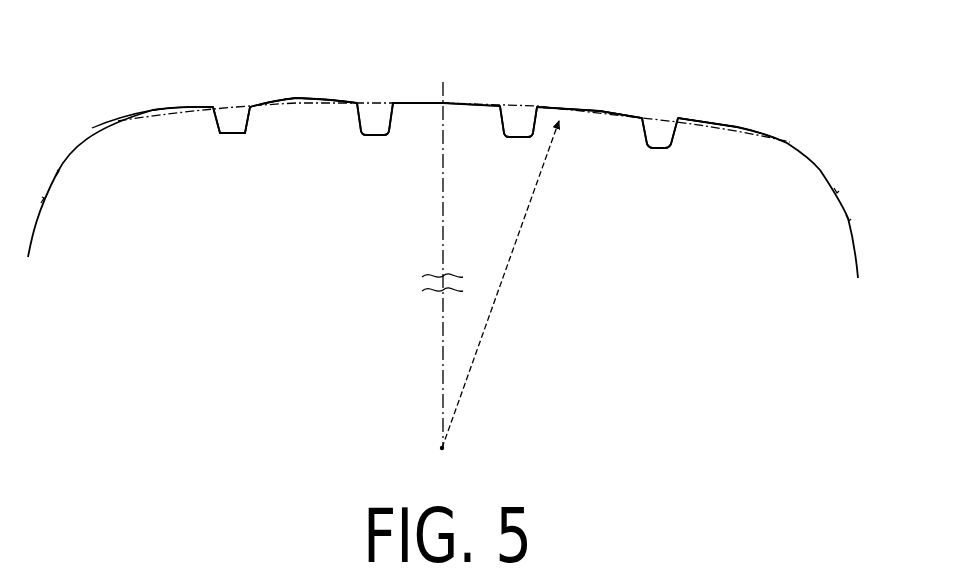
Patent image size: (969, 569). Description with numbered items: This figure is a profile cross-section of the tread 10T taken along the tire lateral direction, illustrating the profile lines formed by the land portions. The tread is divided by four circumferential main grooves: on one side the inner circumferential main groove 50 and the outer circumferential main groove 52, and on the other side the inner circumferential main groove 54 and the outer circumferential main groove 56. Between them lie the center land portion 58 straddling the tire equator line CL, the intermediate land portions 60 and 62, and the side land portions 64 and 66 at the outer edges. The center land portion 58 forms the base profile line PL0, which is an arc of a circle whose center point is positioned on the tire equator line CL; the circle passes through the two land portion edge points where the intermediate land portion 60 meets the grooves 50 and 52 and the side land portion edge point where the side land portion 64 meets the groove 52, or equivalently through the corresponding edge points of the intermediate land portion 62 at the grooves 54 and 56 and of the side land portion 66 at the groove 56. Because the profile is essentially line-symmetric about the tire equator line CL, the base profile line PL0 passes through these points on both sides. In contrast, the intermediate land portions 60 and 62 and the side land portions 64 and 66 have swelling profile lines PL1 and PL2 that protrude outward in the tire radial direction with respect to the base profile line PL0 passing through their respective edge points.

The tread 10T is at (824, 117).
The inner circumferential main groove 50 is at (515, 125).
The outer circumferential main groove 52 is at (662, 127).
The inner circumferential main groove 54 is at (377, 125).
The outer circumferential main groove 56 is at (227, 118).
The center land portion 58 is at (477, 82).
The intermediate land portion 60 is at (569, 98).
The intermediate land portion 62 is at (330, 84).
The side land portion 64 is at (714, 113).
The side land portion 66 is at (190, 85).
The base profile line PL0 is at (295, 108).
The swelling profile line PL1 is at (298, 103).
The swelling profile line PL2 is at (151, 110).
The tire equator line CL is at (490, 253).